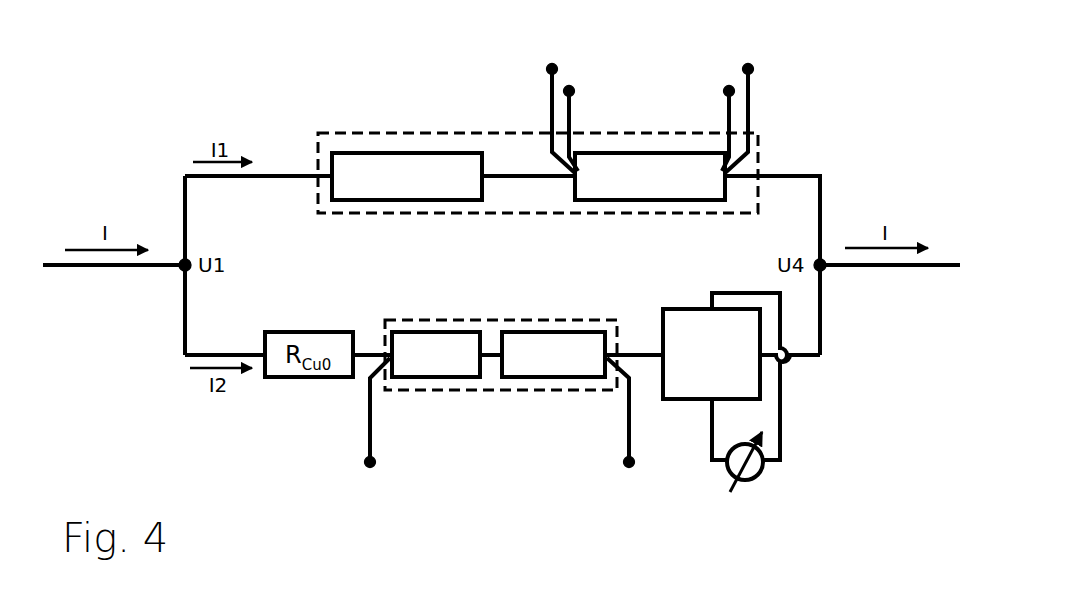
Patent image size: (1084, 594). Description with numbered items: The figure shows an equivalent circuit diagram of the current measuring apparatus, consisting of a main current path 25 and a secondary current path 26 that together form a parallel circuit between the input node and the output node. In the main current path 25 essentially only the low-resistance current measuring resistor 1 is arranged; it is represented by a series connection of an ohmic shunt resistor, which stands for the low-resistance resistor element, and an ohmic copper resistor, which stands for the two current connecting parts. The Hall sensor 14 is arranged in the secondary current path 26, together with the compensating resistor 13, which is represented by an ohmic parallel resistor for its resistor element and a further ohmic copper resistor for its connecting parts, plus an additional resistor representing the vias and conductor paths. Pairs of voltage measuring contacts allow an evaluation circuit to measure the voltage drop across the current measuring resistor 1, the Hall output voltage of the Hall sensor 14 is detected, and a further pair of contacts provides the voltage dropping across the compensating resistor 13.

The low-resistance current measuring resistor 1 is at (440, 133).
The compensating resistor 13 is at (437, 320).
The Hall sensor 14 is at (680, 309).
The main current path 25 is at (303, 173).
The secondary current path 26 is at (237, 353).